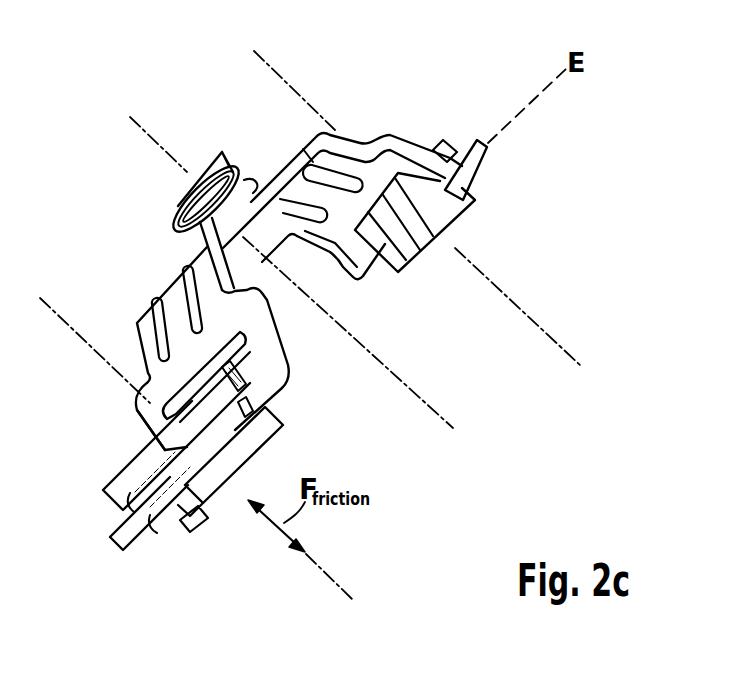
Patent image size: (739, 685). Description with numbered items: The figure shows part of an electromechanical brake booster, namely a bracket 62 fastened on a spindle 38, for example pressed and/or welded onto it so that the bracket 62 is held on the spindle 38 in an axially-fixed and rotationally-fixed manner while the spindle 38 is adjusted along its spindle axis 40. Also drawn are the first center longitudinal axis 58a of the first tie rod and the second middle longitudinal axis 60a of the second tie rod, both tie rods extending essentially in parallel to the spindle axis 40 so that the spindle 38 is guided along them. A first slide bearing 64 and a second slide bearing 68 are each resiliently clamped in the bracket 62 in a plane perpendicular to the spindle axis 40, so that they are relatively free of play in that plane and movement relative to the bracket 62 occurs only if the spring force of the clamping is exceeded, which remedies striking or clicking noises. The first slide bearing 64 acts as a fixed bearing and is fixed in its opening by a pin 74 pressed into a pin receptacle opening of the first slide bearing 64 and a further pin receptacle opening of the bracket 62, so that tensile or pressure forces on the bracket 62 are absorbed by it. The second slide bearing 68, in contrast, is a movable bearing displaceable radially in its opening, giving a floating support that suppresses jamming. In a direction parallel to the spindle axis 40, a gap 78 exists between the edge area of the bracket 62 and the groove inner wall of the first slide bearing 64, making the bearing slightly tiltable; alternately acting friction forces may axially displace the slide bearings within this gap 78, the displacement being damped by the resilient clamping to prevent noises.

The spindle 38 is at (226, 161).
The spindle axis 40 is at (390, 362).
The first center longitudinal axis 58a is at (70, 328).
The second middle longitudinal axis 60a is at (281, 69).
The bracket 62 is at (241, 316).
The first slide bearing 64 is at (207, 488).
The second slide bearing 68 is at (460, 210).
The pin 74 is at (194, 527).
The gap 78 is at (190, 448).